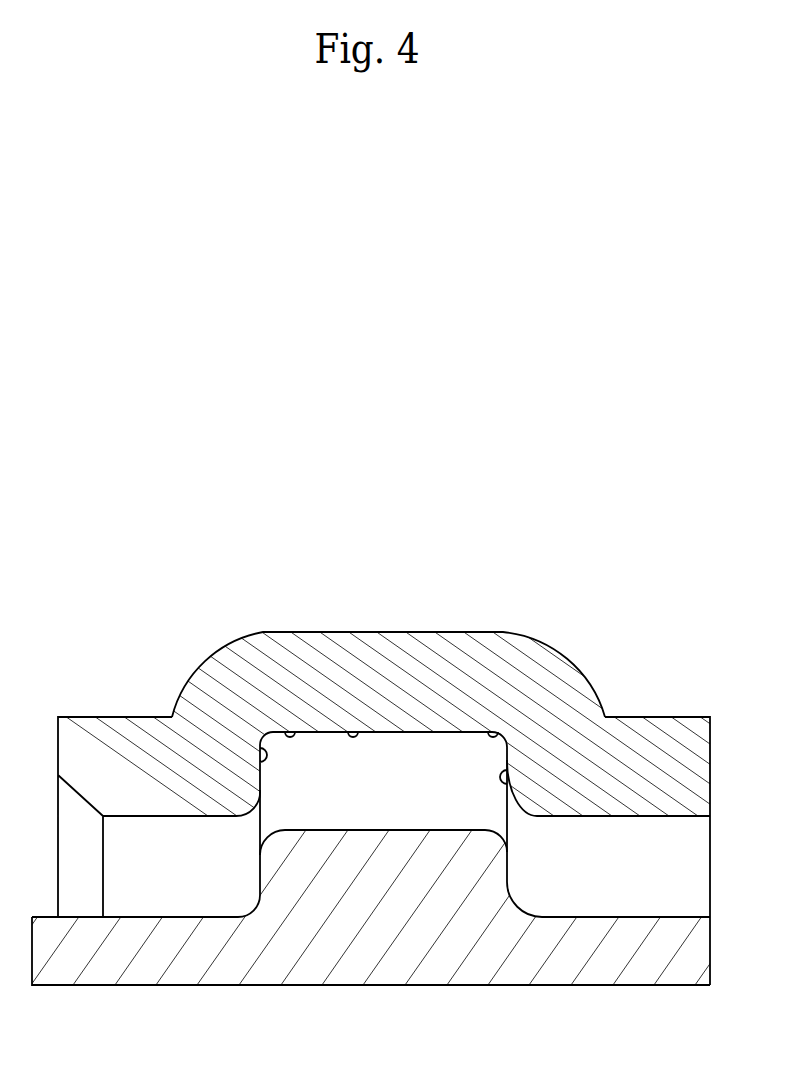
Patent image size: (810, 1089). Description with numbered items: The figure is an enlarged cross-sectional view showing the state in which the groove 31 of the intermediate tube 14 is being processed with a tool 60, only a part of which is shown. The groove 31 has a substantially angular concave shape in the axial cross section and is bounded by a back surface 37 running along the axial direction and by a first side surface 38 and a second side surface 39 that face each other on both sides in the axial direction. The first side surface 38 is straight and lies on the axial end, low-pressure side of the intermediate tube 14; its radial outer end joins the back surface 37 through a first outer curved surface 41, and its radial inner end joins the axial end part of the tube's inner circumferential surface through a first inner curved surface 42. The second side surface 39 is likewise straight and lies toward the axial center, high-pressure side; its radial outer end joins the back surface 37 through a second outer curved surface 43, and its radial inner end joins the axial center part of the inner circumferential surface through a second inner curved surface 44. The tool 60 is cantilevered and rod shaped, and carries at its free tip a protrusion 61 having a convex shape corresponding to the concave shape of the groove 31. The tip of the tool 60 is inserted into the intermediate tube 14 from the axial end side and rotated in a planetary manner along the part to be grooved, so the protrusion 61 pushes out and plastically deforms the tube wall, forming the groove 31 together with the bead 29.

The intermediate tube 14 is at (672, 725).
The bead 29 is at (446, 648).
The groove 31 is at (404, 745).
The back surface 37 is at (354, 733).
The first side surface 38 is at (264, 735).
The second side surface 39 is at (510, 762).
The first outer curved surface 41 is at (292, 733).
The first inner curved surface 42 is at (252, 815).
The second outer curved surface 43 is at (492, 732).
The second inner curved surface 44 is at (547, 817).
The tool 60 is at (677, 917).
The protrusion 61 is at (512, 878).